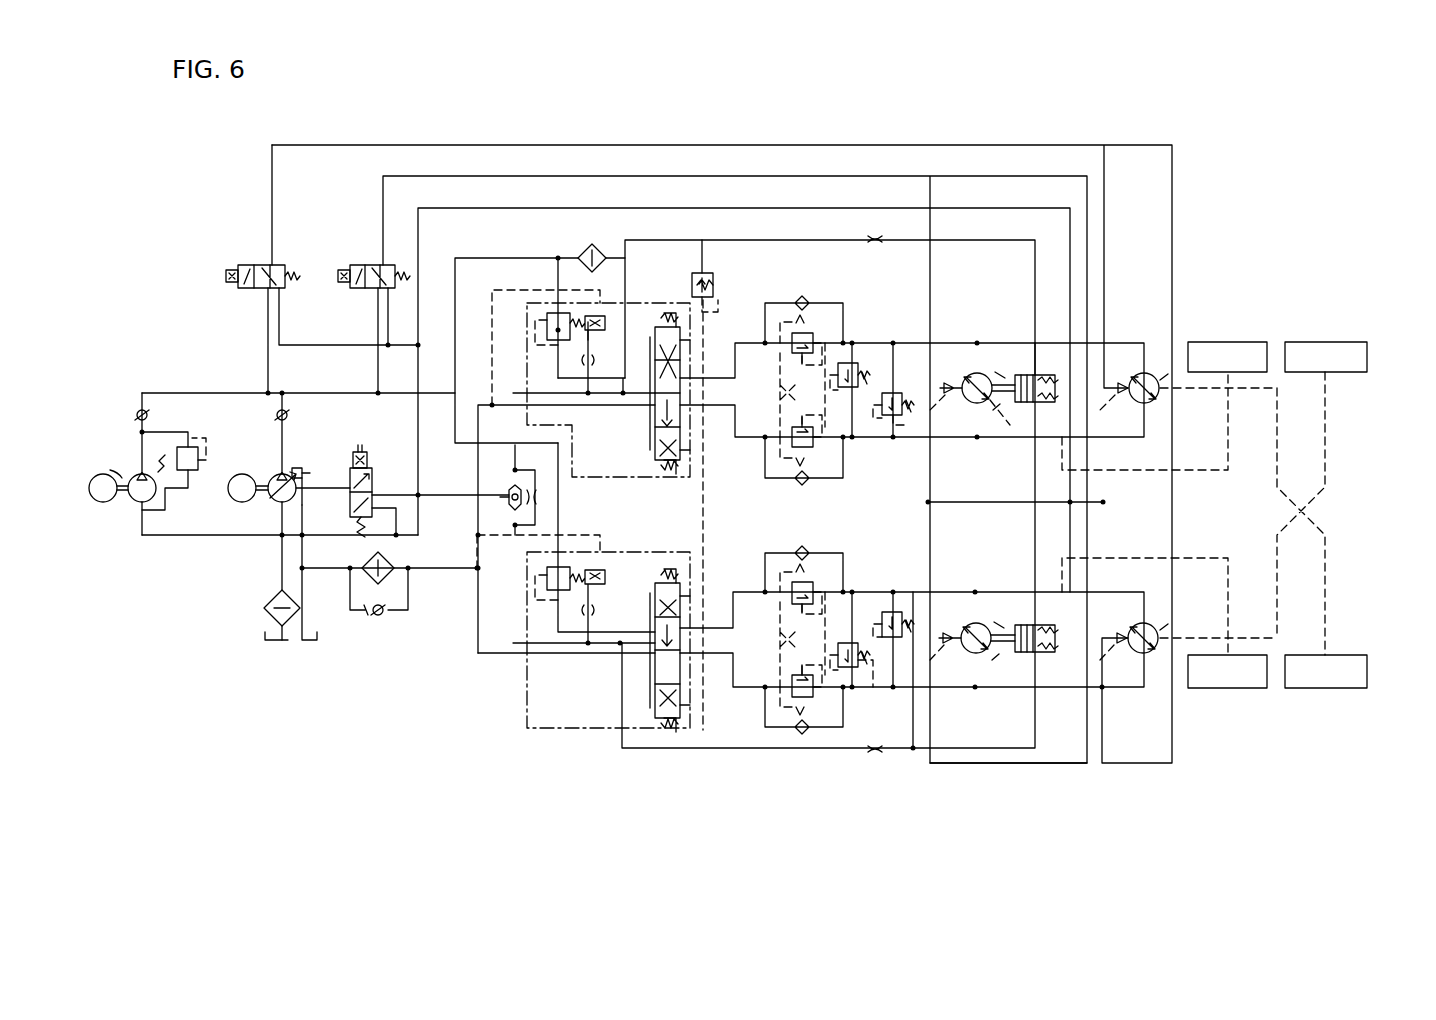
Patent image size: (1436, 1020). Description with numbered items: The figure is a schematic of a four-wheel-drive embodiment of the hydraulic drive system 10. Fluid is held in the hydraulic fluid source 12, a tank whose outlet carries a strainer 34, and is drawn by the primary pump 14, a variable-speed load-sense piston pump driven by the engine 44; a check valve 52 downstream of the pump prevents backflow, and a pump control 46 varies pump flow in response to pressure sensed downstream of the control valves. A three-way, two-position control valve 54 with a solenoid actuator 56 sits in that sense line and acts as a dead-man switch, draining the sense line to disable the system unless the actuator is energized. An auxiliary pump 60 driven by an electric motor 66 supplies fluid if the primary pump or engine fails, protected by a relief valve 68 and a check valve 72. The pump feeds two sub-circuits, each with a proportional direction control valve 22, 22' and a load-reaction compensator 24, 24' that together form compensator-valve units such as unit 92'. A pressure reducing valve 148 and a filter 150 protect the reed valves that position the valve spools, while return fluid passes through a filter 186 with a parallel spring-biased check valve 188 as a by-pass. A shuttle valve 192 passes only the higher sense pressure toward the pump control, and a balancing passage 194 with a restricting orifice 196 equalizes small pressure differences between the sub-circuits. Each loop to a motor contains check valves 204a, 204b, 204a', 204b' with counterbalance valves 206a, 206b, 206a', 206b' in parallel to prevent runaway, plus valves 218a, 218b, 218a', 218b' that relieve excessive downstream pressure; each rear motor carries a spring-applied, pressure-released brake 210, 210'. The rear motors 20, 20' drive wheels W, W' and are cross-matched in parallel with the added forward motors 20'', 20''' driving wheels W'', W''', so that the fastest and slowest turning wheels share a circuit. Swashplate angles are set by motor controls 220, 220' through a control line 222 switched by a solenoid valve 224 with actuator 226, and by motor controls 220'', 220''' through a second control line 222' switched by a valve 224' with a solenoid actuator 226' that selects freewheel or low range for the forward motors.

The hydraulic drive system 10 is at (358, 784).
The hydraulic fluid source 12 is at (282, 642).
The primary pump 14 is at (280, 500).
The hydraulic motor 20 is at (972, 428).
The hydraulic motor 20' is at (972, 604).
The hydraulic motor 20'' is at (1195, 327).
The hydraulic motor 20''' is at (1187, 714).
The proportional direction control valve 22 is at (645, 393).
The proportional direction control valve 22' is at (637, 690).
The load-reaction compensator 24 is at (514, 211).
The load-reaction compensator 24' is at (550, 574).
The strainer 34 is at (268, 608).
The engine 44 is at (235, 500).
The pump control 46 is at (305, 478).
The check valve 52 is at (290, 410).
The three-way, two-position control valve 54 is at (378, 492).
The solenoid actuator 56 is at (362, 448).
The auxiliary pump 60 is at (138, 500).
The electric motor 66 is at (98, 474).
The relief valve 68 is at (200, 468).
The check valve 72 is at (150, 410).
The compensator-valve unit 92' is at (521, 792).
The pressure reducing valve 148 is at (715, 272).
The filter 150 is at (592, 245).
The filter 186 is at (372, 580).
The spring-biased check valve 188 is at (386, 612).
The shuttle valve 192 is at (503, 497).
The balancing passage 194 is at (535, 518).
The restricting orifice 196 is at (540, 497).
The check valve 204a is at (792, 298).
The check valve 204b is at (776, 475).
The check valve 204a' is at (776, 554).
The check valve 204b' is at (770, 751).
The counterbalance valve 206a is at (827, 271).
The counterbalance valve 206b is at (849, 444).
The counterbalance valve 206a' is at (839, 551).
The counterbalance valve 206b' is at (835, 735).
The spring-applied, pressure-released brake 210 is at (1041, 427).
The spring-applied, pressure-released brake 210' is at (1020, 582).
The valve 218a is at (942, 344).
The valve 218b is at (931, 324).
The valve 218a' is at (893, 607).
The valve 218b' is at (905, 716).
The motor control 220 is at (969, 335).
The motor control 220' is at (975, 680).
The motor control 220'' is at (1217, 275).
The motor control 220''' is at (1091, 737).
The control line 222 is at (769, 424).
The second control line 222' is at (722, 417).
The solenoid actuated, three-way, two-position valve 224 is at (350, 329).
The solenoid actuated, three-way, two-position valve 224' is at (285, 269).
The actuator 226 is at (322, 235).
The solenoid actuator 226' is at (195, 224).
The vehicle wheel W is at (1254, 329).
The vehicle wheel W' is at (1360, 329).
The vehicle wheel W'' is at (1354, 638).
The vehicle wheel W''' is at (1265, 720).